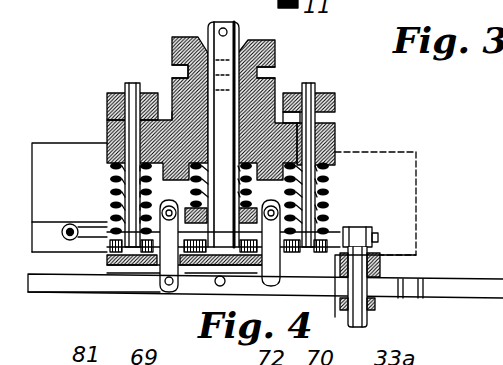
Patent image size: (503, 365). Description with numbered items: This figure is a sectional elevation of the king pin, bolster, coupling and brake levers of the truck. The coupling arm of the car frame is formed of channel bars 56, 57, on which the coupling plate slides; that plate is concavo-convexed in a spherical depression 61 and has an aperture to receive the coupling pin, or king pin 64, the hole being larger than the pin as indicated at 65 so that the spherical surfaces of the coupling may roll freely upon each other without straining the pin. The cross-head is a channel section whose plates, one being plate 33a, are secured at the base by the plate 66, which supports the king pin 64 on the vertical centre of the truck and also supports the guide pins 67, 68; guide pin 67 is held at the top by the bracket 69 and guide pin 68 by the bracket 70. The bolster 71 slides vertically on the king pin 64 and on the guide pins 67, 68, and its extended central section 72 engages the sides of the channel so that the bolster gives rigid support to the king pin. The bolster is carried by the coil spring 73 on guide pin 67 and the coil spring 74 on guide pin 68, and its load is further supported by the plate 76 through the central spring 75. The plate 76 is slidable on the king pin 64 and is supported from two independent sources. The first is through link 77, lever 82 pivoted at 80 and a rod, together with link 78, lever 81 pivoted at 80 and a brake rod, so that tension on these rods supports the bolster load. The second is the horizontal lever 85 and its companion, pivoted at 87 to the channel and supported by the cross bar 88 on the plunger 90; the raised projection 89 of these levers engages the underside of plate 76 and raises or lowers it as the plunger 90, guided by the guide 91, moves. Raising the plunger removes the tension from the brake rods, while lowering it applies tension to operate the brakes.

The plate 33a is at (224, 199).
The channel bar 56 is at (172, 48).
The channel bar 57 is at (277, 78).
The spherical depression 61 is at (174, 72).
The king pin 64 is at (246, 20).
The clearance 65 is at (208, 45).
The plate 66 is at (140, 263).
The guide pin 67 is at (107, 114).
The guide pin 68 is at (335, 118).
The bracket 69 is at (123, 96).
The bracket 70 is at (335, 100).
The bolster 71 is at (335, 138).
The extended section 72 is at (190, 172).
The coil spring 73 is at (110, 180).
The coil spring 74 is at (330, 190).
The central spring 75 is at (110, 204).
The plate 76 is at (330, 208).
The link 77 is at (156, 284).
The link 78 is at (283, 278).
The pivot 80 is at (224, 286).
The lever 81 is at (38, 290).
The lever 82 is at (437, 297).
The horizontal lever 85 is at (100, 233).
The pivot 87 is at (71, 236).
The cross bar 88 is at (358, 233).
The raised projection 89 is at (212, 272).
The plunger 90 is at (367, 320).
The guide 91 is at (377, 270).